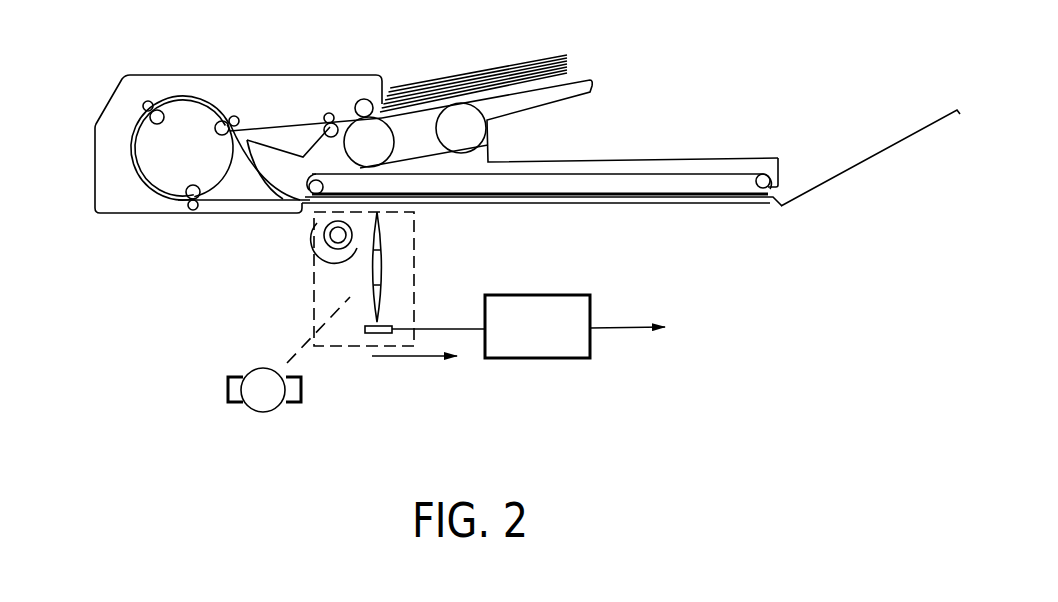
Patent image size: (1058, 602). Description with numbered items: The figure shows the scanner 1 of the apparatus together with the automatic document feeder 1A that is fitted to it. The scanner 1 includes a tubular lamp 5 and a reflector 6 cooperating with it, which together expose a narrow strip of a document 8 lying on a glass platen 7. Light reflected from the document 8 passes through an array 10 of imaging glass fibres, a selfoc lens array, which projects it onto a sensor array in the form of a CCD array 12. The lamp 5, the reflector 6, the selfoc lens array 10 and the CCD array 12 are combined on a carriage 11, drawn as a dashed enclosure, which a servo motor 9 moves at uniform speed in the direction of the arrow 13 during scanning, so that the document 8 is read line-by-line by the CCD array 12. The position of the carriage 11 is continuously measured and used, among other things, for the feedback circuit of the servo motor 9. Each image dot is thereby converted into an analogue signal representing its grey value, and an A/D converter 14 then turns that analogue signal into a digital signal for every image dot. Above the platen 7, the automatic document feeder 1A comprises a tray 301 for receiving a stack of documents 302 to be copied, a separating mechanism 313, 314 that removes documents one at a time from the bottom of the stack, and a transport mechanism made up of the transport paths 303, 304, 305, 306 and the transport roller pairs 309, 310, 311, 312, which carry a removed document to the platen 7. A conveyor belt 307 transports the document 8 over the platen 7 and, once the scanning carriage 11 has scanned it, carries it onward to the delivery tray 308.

The scanner 1 is at (290, 297).
The automatic document feeder 1A is at (158, 245).
The tubular lamp 5 is at (322, 235).
The reflector 6 is at (331, 257).
The glass platen 7 is at (752, 204).
The document 8 is at (512, 199).
The servo motor 9 is at (283, 408).
The array of imaging glass fibres 10 is at (383, 268).
The carriage 11 is at (414, 236).
The CCD array 12 is at (372, 336).
The arrow 13 is at (418, 361).
The A/D converter 14 is at (543, 295).
The tray 301 is at (582, 72).
The stack of documents 302 is at (469, 71).
The transport path 303 is at (292, 128).
The transport path 304 is at (178, 96).
The transport path 305 is at (141, 176).
The transport path 306 is at (252, 166).
The conveyor belt 307 is at (594, 173).
The delivery tray 308 is at (814, 189).
The transport roller pair 309 is at (330, 113).
The transport roller pair 310 is at (216, 123).
The transport roller pair 311 is at (143, 103).
The transport roller pair 312 is at (193, 211).
The separating mechanism 313 is at (485, 110).
The separating mechanism 314 is at (367, 99).